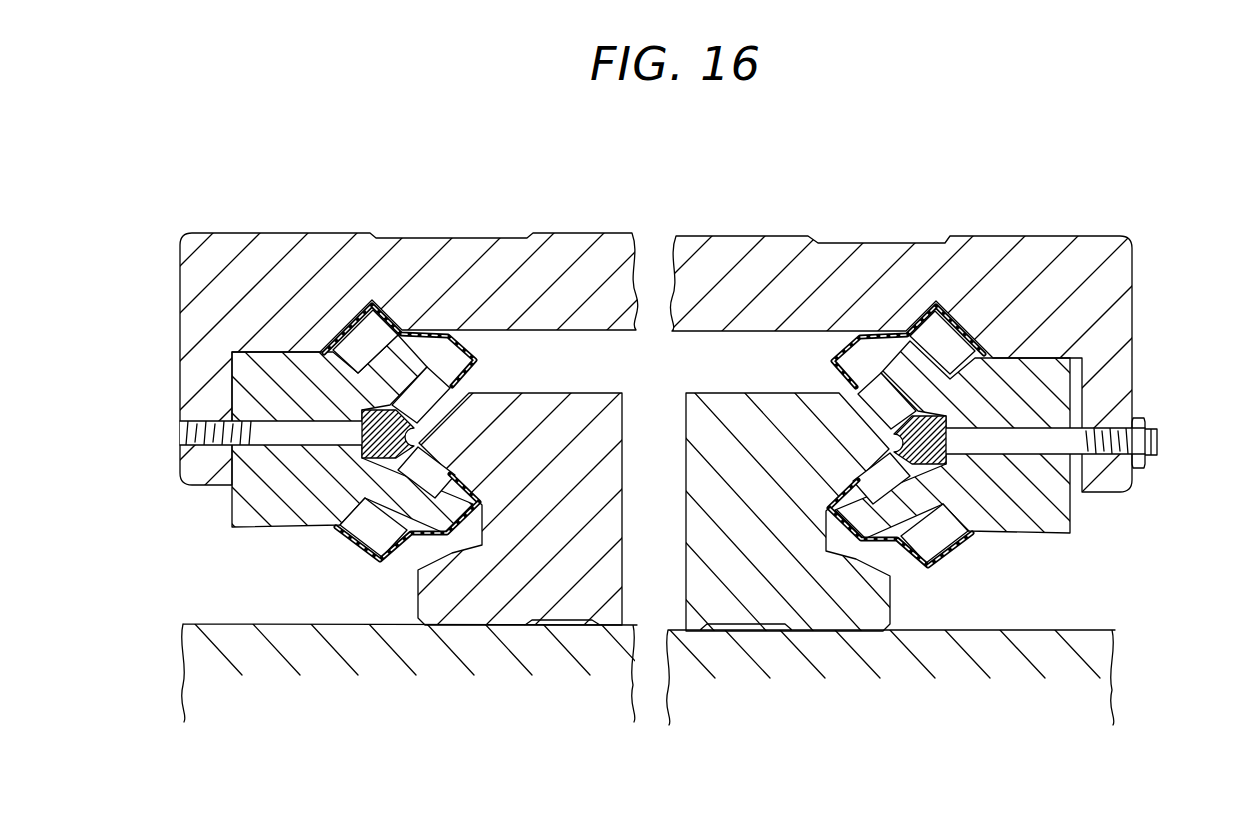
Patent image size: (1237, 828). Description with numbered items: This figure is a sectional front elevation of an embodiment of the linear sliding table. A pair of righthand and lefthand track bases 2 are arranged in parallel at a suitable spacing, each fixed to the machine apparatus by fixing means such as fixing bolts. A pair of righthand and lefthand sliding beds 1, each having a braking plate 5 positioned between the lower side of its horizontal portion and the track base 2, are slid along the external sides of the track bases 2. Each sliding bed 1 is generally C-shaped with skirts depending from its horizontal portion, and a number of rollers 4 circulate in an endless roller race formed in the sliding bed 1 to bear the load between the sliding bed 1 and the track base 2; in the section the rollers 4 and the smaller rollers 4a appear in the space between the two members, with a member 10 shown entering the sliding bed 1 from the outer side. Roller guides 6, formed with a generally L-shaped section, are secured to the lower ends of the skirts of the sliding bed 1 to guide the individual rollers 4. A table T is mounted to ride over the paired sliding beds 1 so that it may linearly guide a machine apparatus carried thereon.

The sliding bed 1 is at (238, 535).
The track base 2 is at (469, 633).
The roller 4 is at (362, 328).
The roller 4a is at (430, 398).
The braking plate 5 is at (362, 458).
The roller guide 6 is at (468, 335).
The adjusting bolt 10 is at (182, 433).
The table T is at (733, 255).